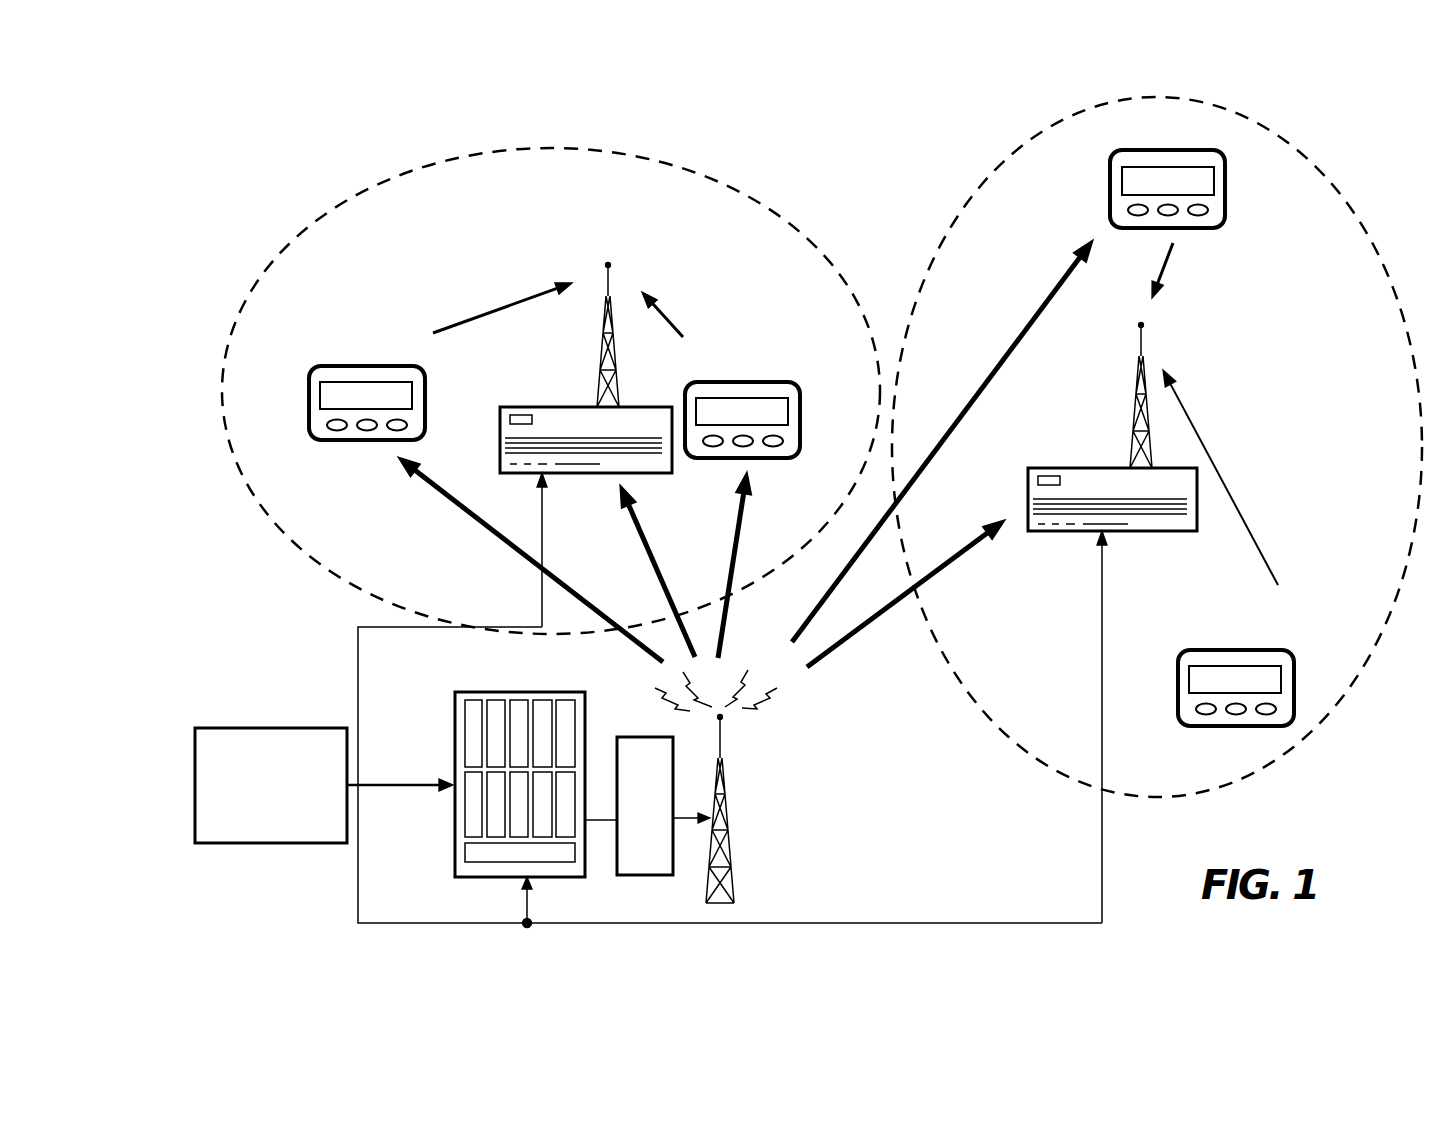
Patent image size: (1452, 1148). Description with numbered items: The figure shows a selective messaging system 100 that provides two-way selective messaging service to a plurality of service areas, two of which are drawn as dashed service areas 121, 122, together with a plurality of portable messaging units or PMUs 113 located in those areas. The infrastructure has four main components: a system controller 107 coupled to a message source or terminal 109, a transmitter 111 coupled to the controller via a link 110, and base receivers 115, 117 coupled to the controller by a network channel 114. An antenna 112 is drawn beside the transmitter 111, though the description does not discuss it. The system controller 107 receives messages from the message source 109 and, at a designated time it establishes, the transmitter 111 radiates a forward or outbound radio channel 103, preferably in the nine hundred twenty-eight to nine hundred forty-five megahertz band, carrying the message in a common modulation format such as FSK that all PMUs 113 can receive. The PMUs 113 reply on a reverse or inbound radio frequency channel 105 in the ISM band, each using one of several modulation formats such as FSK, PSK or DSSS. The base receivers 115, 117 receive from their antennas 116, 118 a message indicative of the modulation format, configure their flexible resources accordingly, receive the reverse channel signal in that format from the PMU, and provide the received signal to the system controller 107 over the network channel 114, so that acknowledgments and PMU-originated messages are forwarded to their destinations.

The selective messaging system 100 is at (1292, 853).
The forward radio channel 103 is at (728, 605).
The reverse radio frequency channel 105 is at (653, 290).
The system controller 107 is at (455, 803).
The message source 109 is at (324, 785).
The link 110 is at (613, 820).
The transmitter 111 is at (663, 806).
The transmitter antenna 112 is at (722, 743).
The PMU 113 is at (309, 395).
The network channel 114 is at (542, 507).
The base receiver 115 is at (502, 407).
The antenna 116 is at (605, 322).
The base receiver 117 is at (1030, 468).
The antenna 118 is at (1140, 328).
The service area 121 is at (673, 163).
The service area 122 is at (1293, 145).